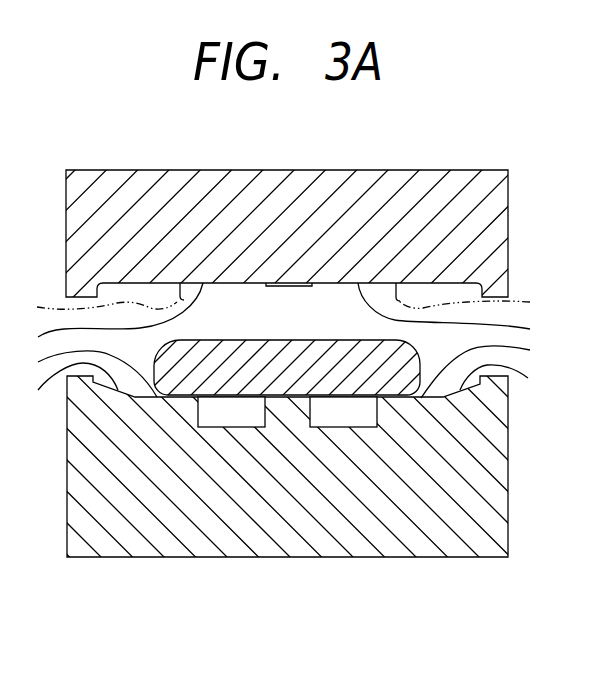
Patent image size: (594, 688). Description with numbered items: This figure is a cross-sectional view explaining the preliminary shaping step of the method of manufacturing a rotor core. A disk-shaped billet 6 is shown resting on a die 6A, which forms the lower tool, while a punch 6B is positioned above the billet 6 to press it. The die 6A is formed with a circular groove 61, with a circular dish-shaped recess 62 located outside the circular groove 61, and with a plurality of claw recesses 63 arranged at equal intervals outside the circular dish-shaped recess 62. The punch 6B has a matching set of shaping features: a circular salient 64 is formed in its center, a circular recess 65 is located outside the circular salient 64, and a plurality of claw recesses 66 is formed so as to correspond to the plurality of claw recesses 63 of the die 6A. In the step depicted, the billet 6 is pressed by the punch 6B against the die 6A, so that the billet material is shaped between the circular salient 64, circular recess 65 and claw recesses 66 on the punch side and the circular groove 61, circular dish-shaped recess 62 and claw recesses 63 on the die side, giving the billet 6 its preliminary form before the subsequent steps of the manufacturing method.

The billet 6 is at (317, 340).
The die 6A is at (122, 559).
The punch 6B is at (467, 169).
The circular groove 61 is at (237, 422).
The circular dish-shaped recess 62 is at (283, 368).
The claw recesses 63 is at (283, 386).
The circular salient 64 is at (290, 286).
The circular recess 65 is at (283, 318).
The claw recesses 66 is at (283, 304).